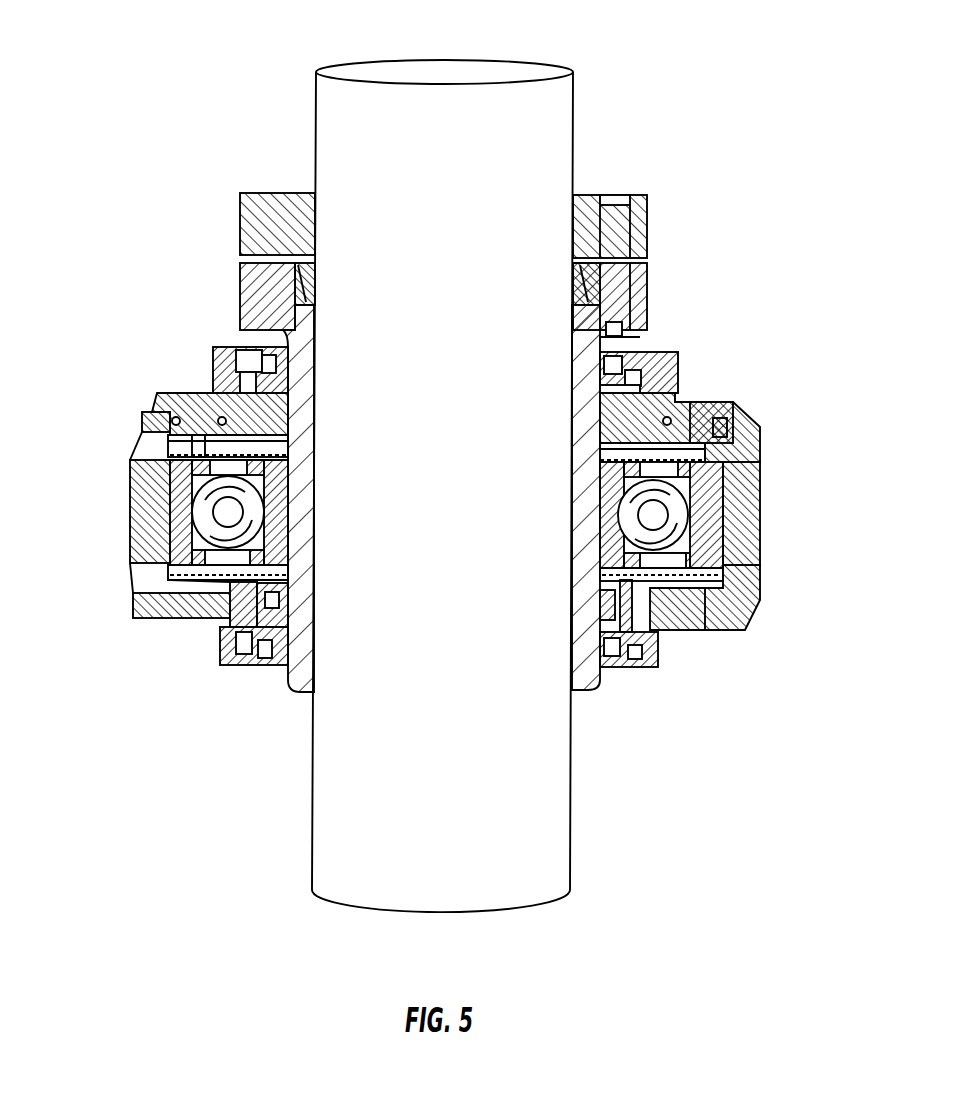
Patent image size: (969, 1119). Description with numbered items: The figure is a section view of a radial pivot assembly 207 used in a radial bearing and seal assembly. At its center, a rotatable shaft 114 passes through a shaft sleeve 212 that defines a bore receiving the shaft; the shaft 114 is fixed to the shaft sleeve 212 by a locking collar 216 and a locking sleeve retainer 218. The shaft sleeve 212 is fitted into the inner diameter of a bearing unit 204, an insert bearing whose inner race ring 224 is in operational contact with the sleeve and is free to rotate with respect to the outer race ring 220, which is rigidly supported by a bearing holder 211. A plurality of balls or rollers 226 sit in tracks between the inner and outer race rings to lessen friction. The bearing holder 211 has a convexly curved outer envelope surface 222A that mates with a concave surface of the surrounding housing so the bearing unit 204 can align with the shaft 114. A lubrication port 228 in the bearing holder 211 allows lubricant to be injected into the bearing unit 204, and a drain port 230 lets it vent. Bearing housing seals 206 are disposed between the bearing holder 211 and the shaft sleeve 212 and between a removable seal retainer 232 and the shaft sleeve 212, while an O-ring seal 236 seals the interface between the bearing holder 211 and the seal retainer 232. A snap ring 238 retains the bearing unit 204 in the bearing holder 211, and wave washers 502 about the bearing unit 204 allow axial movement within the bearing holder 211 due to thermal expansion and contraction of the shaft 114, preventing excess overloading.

The pivot assembly 207 is at (185, 88).
The shaft 114 is at (390, 62).
The locking sleeve retainer 218 is at (262, 198).
The locking collar 216 is at (300, 278).
The shaft sleeve 212 is at (292, 684).
The wave washers 502 is at (202, 447).
The lubrication port 228 is at (135, 455).
The snap ring 238 is at (150, 418).
The bearing unit 204 is at (215, 513).
The drain port 230 is at (150, 578).
The bearing housing seals 206 is at (655, 352).
The seal retainer 232 is at (735, 412).
The O-ring seal 236 is at (750, 420).
The outer envelope surface 222A is at (760, 437).
The outer race ring 220 is at (712, 497).
The balls or rollers 226 is at (667, 516).
The inner race ring 224 is at (637, 555).
The bearing holder 211 is at (707, 615).